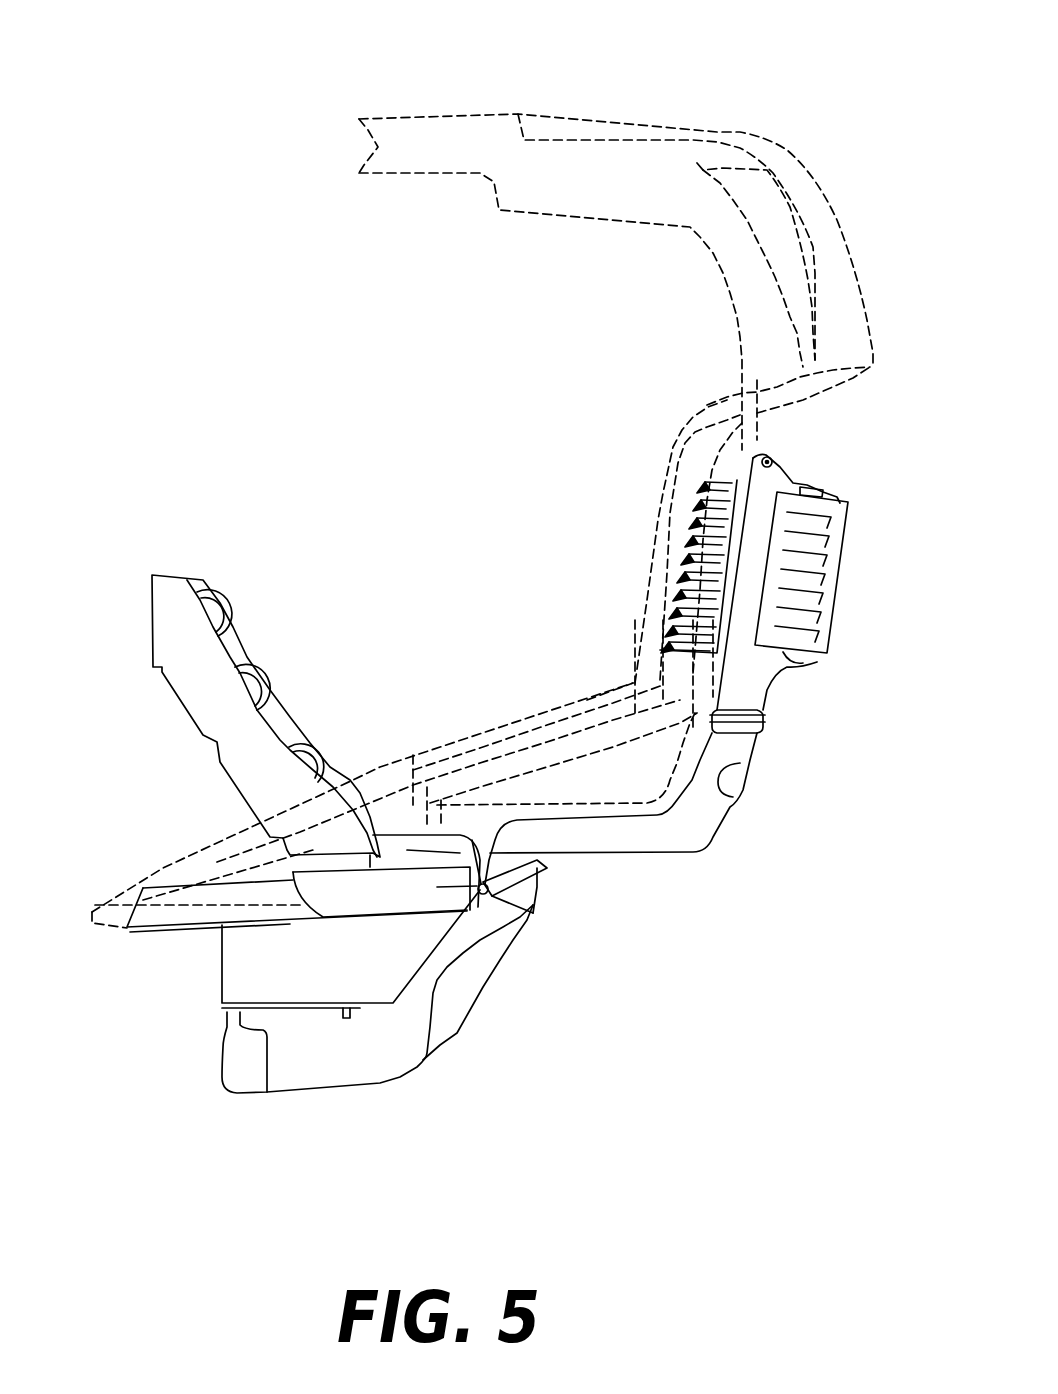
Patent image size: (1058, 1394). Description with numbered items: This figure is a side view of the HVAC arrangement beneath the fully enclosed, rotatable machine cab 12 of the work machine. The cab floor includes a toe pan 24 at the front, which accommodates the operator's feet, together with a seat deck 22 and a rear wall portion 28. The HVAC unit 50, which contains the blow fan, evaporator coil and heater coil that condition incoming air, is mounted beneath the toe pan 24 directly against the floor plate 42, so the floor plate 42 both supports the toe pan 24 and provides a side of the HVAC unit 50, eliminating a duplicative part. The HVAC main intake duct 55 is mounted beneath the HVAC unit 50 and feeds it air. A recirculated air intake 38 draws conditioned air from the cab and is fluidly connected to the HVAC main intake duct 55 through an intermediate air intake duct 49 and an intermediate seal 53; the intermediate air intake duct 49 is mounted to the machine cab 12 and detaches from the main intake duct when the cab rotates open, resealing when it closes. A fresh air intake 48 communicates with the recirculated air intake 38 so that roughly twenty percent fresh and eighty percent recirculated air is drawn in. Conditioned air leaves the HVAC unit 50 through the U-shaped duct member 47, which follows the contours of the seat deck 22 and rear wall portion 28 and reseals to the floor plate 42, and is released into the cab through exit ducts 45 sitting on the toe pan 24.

The machine cab 12 is at (641, 103).
The seat deck 22 is at (517, 723).
The toe pan 24 is at (377, 773).
The rear wall portion 28 is at (648, 588).
The recirculated air intake 38 is at (636, 475).
The floor plate 42 is at (119, 932).
The exit ducts 45 is at (213, 733).
The U-shaped duct member 47 is at (517, 923).
The fresh air intake 48 is at (818, 580).
The intermediate air intake duct 49 is at (697, 830).
The HVAC unit 50 is at (242, 975).
The intermediate seal 53 is at (556, 870).
The HVAC main intake duct 55 is at (390, 1058).